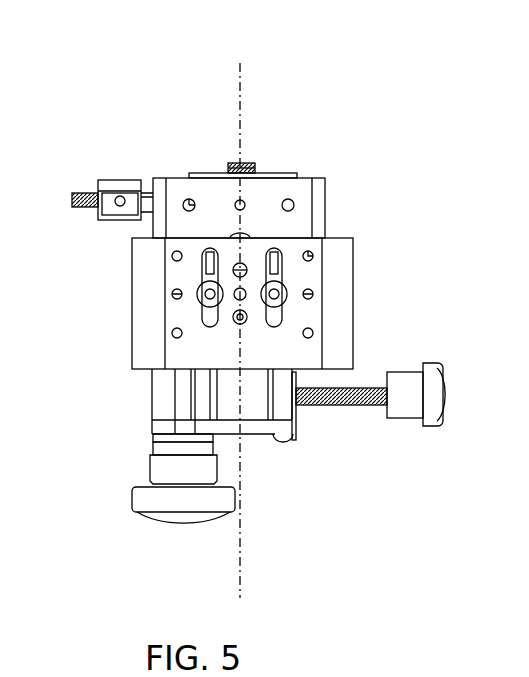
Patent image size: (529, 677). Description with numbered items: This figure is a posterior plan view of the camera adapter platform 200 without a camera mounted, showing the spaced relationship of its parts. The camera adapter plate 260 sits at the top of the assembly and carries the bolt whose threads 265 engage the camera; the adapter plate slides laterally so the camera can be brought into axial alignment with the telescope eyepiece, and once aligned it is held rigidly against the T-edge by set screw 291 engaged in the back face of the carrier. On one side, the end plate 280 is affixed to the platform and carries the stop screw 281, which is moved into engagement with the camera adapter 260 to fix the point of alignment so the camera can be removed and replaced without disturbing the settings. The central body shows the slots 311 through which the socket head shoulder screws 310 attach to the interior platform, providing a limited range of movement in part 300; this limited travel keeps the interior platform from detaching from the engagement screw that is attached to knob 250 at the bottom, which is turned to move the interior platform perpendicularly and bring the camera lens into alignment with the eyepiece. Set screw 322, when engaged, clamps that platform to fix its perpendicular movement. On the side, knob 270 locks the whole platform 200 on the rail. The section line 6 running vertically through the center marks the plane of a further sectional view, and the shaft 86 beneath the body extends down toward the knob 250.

The section line 6- 6 is at (240, 63).
The platform 200 is at (428, 208).
The knob 250 is at (192, 498).
The camera adapter plate 260 is at (283, 173).
The threads of the bolt 265 is at (242, 162).
The knob 270 is at (413, 397).
The end plate 280 is at (133, 180).
The stop screw 281 is at (78, 191).
The set screw 291 is at (292, 222).
The part 300 is at (282, 398).
The socket head shoulder screws 310 is at (201, 298).
The slots 311 is at (208, 269).
The set screw 322 is at (250, 319).
The shaft 86 is at (248, 402).